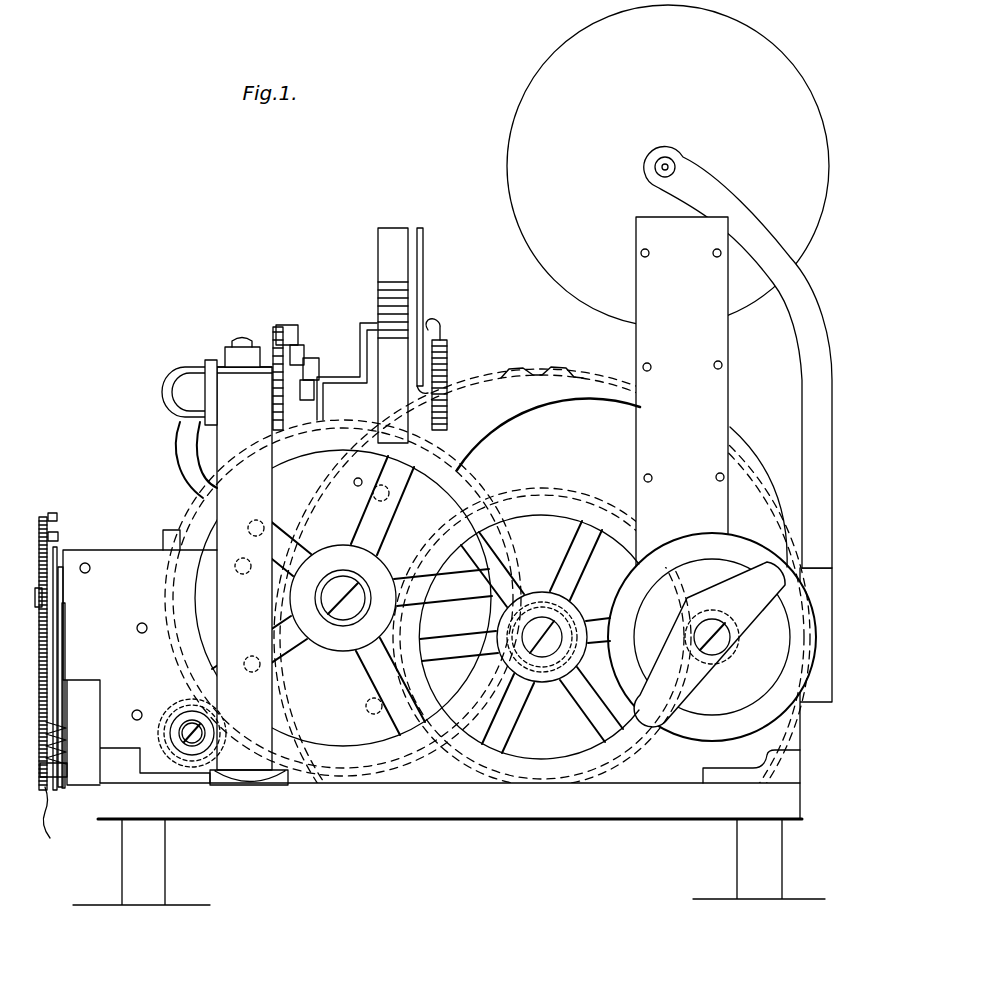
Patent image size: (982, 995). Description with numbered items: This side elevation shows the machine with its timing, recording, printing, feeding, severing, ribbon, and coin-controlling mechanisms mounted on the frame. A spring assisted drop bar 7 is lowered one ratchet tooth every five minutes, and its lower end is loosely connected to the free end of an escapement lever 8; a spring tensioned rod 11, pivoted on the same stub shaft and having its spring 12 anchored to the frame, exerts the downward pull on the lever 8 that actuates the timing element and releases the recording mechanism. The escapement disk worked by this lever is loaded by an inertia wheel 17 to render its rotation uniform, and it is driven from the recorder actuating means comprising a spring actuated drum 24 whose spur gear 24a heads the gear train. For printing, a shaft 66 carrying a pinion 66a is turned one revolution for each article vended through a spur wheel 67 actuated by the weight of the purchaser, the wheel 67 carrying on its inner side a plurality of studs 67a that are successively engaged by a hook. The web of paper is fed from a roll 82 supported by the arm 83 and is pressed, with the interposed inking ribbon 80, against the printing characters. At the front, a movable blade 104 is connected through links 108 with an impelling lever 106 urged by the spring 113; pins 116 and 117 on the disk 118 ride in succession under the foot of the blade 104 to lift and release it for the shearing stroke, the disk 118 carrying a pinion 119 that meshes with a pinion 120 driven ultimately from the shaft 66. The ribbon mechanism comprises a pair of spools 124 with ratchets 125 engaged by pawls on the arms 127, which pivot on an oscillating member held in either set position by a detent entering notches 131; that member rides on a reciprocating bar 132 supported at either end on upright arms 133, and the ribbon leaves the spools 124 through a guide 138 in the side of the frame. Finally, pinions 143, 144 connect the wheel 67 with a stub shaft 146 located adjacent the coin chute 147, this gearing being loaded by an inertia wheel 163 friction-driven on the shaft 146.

The drop bar 7 is at (423, 282).
The escapement lever 8 is at (383, 390).
The spring tensioned rod 11 is at (365, 340).
The spring 12 is at (447, 365).
The inertia wheel 17 is at (178, 453).
The spring actuated drum 24 is at (542, 637).
The spur gear 24a is at (540, 378).
The shaft 66 is at (200, 712).
The pinion 66a is at (190, 770).
The spur wheel 67 is at (186, 588).
The studs 67a is at (470, 470).
The inking ribbon 80 is at (249, 562).
The roll 82 is at (522, 122).
The arm 83 is at (786, 300).
The movable blade 104 is at (58, 575).
The impelling lever 106 is at (48, 697).
The links 108 is at (60, 650).
The spring 113 is at (68, 790).
The pin 116 is at (57, 547).
The pin 117 is at (58, 534).
The disk 118 is at (55, 513).
The pinion 119 is at (41, 518).
The pinion 120 is at (50, 838).
The spools 124 is at (205, 370).
The ratchets 125 is at (272, 352).
The arms 127 is at (287, 325).
The notches 131 is at (304, 348).
The reciprocating bar 132 is at (312, 358).
The upright arms 133 is at (312, 380).
The guide 138 is at (268, 770).
The pinion 143 is at (538, 680).
The pinion 144 is at (483, 760).
The stub shaft 146 is at (720, 652).
The coin chute 147 is at (714, 397).
The inertia wheel 163 is at (683, 570).